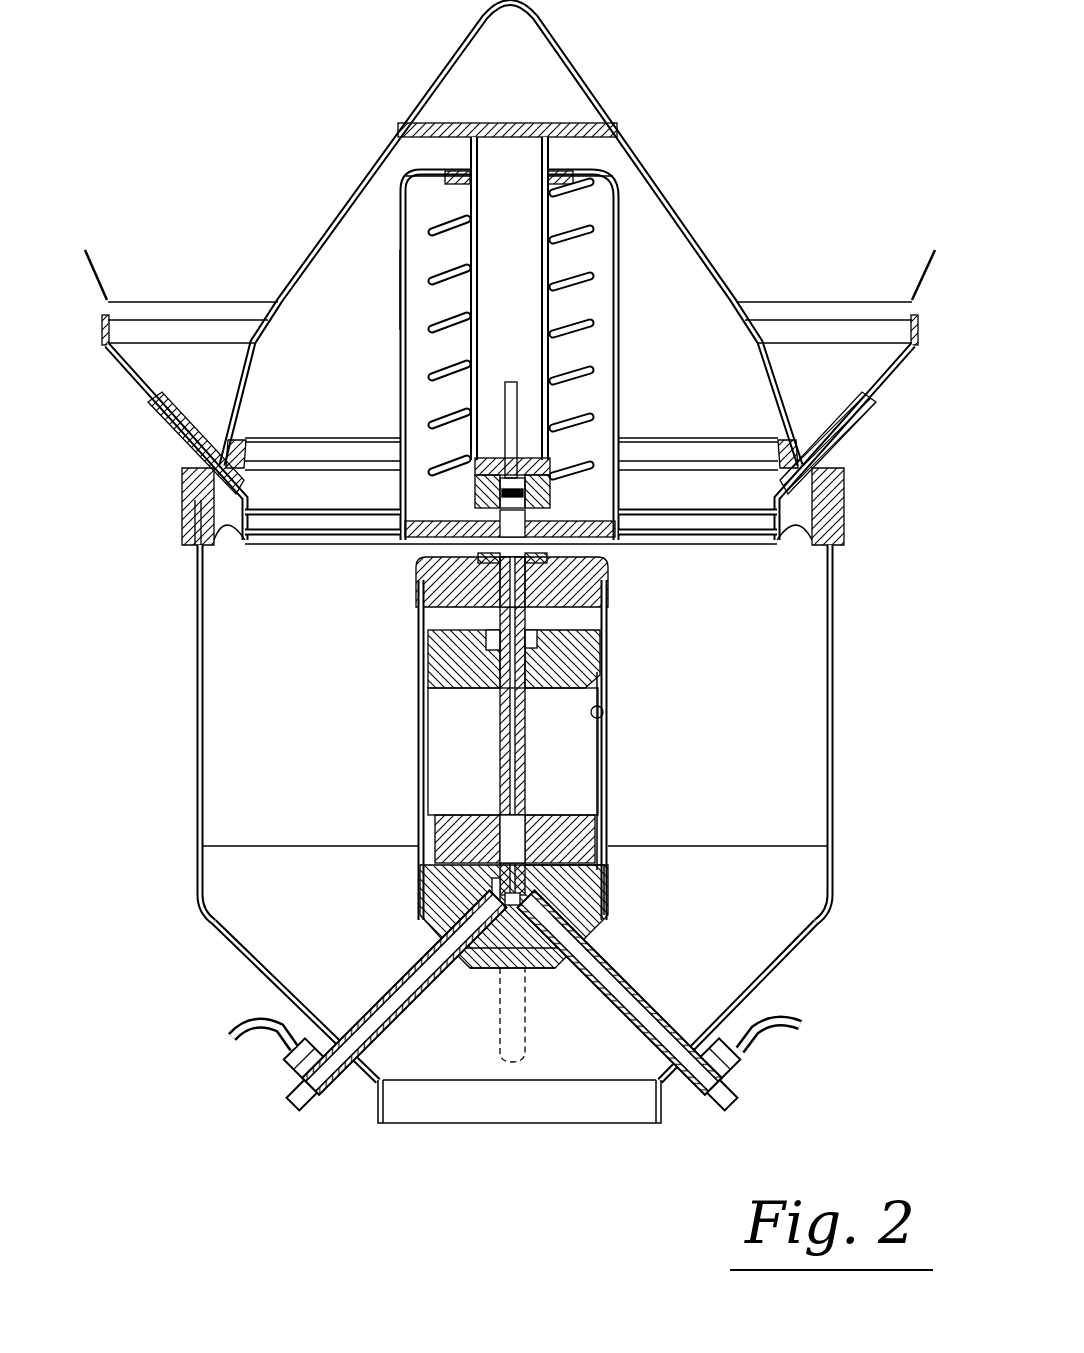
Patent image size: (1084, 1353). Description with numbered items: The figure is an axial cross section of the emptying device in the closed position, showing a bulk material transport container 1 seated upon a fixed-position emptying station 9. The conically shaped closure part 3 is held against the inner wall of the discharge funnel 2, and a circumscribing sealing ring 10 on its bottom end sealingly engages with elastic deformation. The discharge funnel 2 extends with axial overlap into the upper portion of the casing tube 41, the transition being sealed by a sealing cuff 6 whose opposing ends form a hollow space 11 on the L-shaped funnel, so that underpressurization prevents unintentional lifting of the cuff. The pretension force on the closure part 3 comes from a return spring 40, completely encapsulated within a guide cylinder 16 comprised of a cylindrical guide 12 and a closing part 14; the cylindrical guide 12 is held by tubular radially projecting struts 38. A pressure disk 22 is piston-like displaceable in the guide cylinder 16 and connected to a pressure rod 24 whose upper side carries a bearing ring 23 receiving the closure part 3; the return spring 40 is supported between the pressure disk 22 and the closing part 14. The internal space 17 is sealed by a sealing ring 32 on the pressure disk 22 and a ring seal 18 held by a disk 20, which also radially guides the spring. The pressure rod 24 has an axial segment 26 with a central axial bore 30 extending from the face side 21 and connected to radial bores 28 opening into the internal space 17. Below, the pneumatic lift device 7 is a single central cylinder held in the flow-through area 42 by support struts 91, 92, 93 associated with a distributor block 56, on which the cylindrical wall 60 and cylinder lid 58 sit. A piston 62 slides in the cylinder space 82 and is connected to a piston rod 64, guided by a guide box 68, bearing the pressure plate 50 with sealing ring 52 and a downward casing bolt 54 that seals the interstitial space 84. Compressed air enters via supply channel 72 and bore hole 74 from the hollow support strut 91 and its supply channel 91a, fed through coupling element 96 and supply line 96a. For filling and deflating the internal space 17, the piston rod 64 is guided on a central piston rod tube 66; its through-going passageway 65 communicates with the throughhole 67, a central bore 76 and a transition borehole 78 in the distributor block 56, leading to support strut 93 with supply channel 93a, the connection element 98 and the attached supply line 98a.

The bulk material transport container 1 is at (742, 160).
The discharge funnel 2 is at (900, 368).
The closure part 3 is at (556, 47).
The sealing cuff 6 is at (188, 506).
The pneumatic lift device 7 is at (222, 832).
The emptying station 9 is at (850, 964).
The sealing ring 10 is at (248, 440).
The hollow space 11 is at (200, 470).
The cylindrical guide 12 is at (400, 296).
The closing part 14 is at (400, 212).
The guide cylinder 16 is at (350, 263).
The internal space 17 is at (413, 349).
The ring seal 18 is at (458, 165).
The disk 20 is at (440, 178).
The face side 21 is at (545, 540).
The pressure disk 22 is at (612, 508).
The bearing ring 23 is at (565, 122).
The pressure rod 24 is at (565, 312).
The axial segment 26 is at (550, 472).
The radial bores 28 is at (480, 482).
The central axial bore 30 is at (488, 518).
The sealing ring 32 is at (415, 560).
The struts 38 is at (740, 540).
The return spring 40 is at (553, 289).
The casing tube 41 is at (197, 790).
The flow-through area 42 is at (238, 960).
The pressure plate 50 is at (590, 572).
The sealing ring 52 is at (490, 590).
The casing bolt 54 is at (612, 606).
The distributor block 56 is at (606, 889).
The cylinder lid 58 is at (594, 634).
The cylindrical wall 60 is at (603, 712).
The piston 62 is at (598, 833).
The piston rod 64 is at (560, 802).
The through-going passageway 65 is at (600, 660).
The piston rod tube 66 is at (522, 730).
The throughhole 67 is at (500, 762).
The guide box 68 is at (486, 656).
The supply channel 72 is at (425, 892).
The bore hole 74 is at (470, 933).
The central bore 76 is at (522, 902).
The transition borehole 78 is at (548, 926).
The cylinder space 82 is at (447, 722).
The interstitial space 84 is at (445, 630).
The support strut 91 is at (410, 963).
The supply channel 91a is at (392, 1020).
The support strut 92 is at (527, 1021).
The support strut 93 is at (658, 1040).
The supply channel 93a is at (637, 1002).
The coupling element 96 is at (300, 1092).
The supply line 96a is at (262, 1042).
The connection element 98 is at (722, 1078).
The supply line 98a is at (788, 1030).